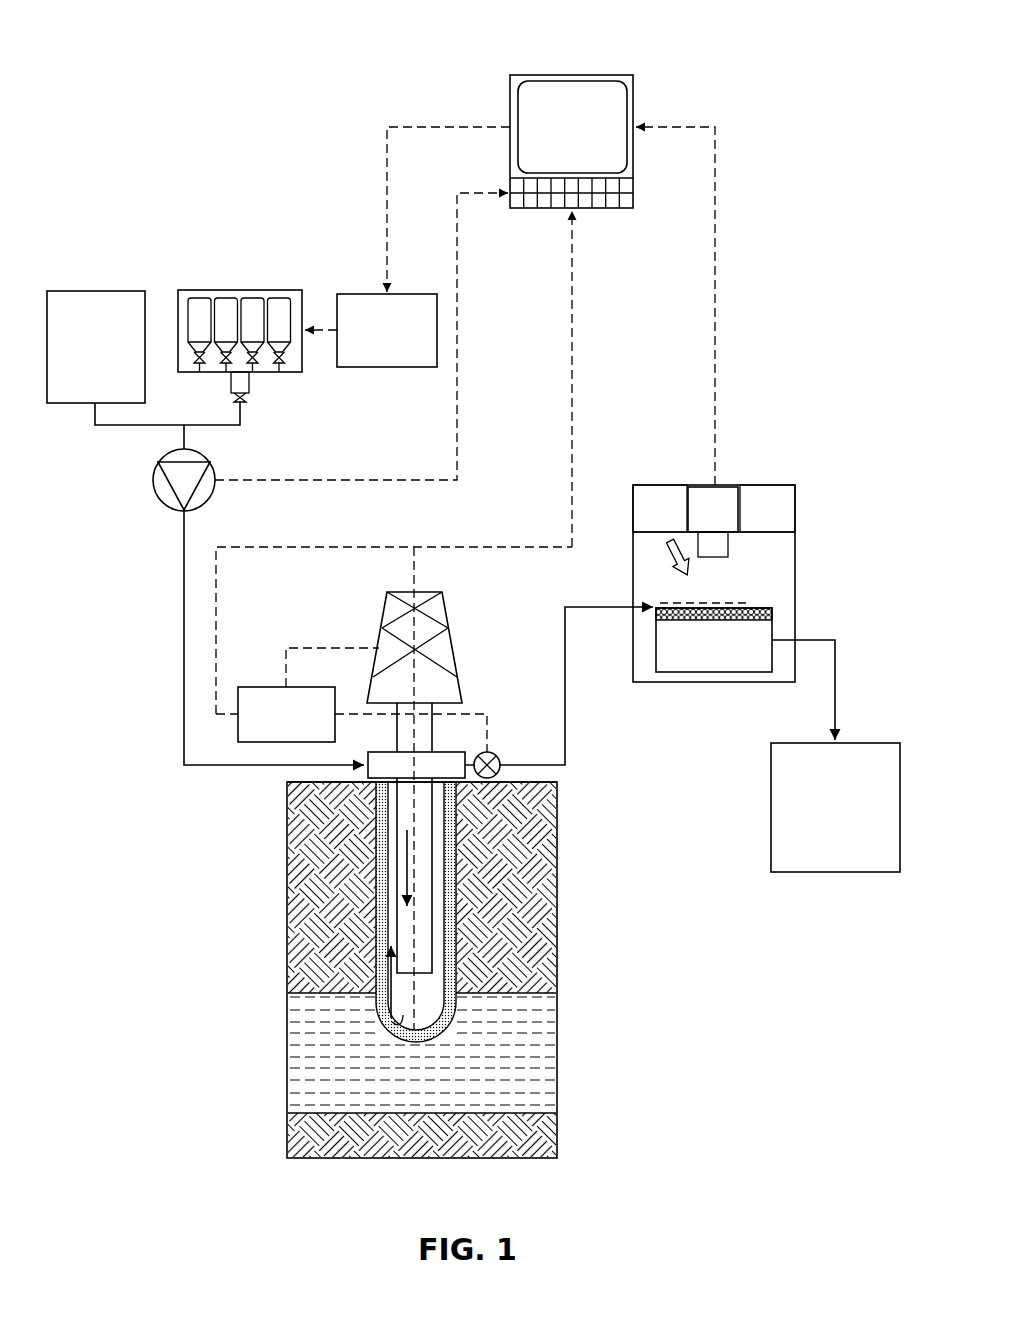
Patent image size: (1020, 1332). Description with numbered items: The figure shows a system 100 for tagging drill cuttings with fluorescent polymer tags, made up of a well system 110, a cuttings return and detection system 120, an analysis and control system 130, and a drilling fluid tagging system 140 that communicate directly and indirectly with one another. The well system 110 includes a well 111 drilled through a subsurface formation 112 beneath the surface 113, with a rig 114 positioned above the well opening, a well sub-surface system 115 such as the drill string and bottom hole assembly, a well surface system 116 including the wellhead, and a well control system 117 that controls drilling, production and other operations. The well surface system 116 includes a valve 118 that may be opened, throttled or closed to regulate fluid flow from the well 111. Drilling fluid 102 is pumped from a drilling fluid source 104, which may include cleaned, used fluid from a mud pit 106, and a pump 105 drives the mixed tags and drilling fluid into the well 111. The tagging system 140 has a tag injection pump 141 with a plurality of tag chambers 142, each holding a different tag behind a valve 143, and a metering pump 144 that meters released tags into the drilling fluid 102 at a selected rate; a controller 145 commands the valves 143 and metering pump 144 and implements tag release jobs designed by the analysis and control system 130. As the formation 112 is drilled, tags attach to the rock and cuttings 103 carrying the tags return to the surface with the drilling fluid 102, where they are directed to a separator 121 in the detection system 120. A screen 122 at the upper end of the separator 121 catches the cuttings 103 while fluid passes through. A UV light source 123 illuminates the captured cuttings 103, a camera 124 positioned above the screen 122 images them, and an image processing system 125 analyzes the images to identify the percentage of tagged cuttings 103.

The system 100 is at (155, 30).
The drilling fluid 102 is at (184, 645).
The cuttings 103 is at (440, 890).
The drilling fluid source 104 is at (117, 361).
The pump 105 is at (162, 458).
The mud pit 106 is at (857, 822).
The well system 110 is at (347, 604).
The well 111 is at (376, 813).
The subsurface formation 112 is at (525, 920).
The surface 113 is at (560, 796).
The rig 114 is at (442, 602).
The well sub-surface system 115 is at (426, 1002).
The well surface system 116 is at (477, 697).
The well control system 117 is at (310, 729).
The valve 118 is at (494, 753).
The cuttings return and detection system 120 is at (790, 450).
The separator 121 is at (740, 656).
The screen 122 is at (773, 613).
The UV light source 123 is at (680, 523).
The camera 124 is at (732, 523).
The image processing system 125 is at (783, 523).
The analysis and control system 130 is at (610, 46).
The drilling fluid tagging system 140 is at (237, 215).
The tag injection pump 141 is at (283, 289).
The tag chambers 142 is at (253, 304).
The valve 143 is at (285, 357).
The metering pump 144 is at (243, 382).
The controller 145 is at (409, 344).